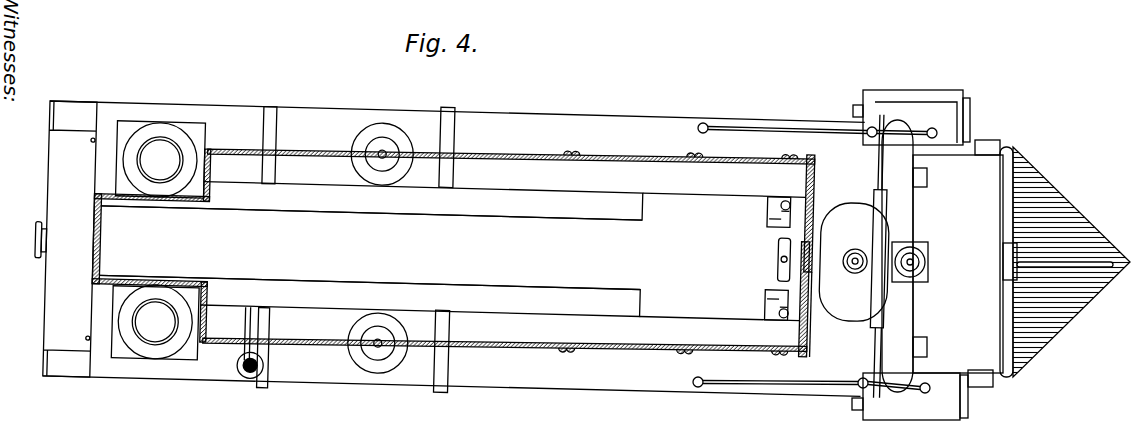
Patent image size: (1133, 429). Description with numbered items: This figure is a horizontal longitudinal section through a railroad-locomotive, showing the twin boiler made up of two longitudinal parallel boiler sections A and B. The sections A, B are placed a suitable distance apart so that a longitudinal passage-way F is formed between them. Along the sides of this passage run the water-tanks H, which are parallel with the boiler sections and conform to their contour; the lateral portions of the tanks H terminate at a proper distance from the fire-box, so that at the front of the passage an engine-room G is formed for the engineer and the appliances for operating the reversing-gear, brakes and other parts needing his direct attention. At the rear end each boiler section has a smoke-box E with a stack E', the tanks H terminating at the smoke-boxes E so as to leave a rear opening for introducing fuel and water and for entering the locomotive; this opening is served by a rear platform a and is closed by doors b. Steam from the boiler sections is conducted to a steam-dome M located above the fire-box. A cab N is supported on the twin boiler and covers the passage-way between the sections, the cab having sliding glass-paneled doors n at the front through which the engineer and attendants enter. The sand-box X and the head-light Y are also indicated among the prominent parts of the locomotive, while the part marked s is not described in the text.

The boiler section A is at (457, 109).
The boiler section B is at (452, 379).
The rear platform a is at (70, 239).
The doors b is at (145, 240).
The smoke-box E is at (155, 322).
The smoke-stack E' is at (161, 159).
The sand-box X is at (372, 245).
The cab N is at (509, 249).
The water-tanks H is at (371, 248).
The passage-way F is at (370, 248).
The engine-room G is at (723, 257).
The sliding glass-paneled doors n is at (812, 256).
The steam-dome M is at (854, 255).
The head-light Y is at (918, 262).
The bracket s is at (910, 396).